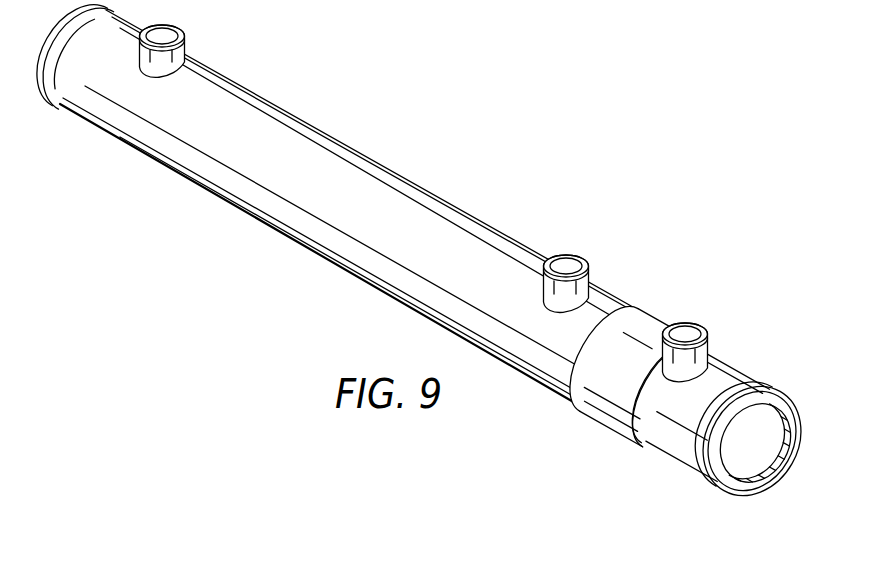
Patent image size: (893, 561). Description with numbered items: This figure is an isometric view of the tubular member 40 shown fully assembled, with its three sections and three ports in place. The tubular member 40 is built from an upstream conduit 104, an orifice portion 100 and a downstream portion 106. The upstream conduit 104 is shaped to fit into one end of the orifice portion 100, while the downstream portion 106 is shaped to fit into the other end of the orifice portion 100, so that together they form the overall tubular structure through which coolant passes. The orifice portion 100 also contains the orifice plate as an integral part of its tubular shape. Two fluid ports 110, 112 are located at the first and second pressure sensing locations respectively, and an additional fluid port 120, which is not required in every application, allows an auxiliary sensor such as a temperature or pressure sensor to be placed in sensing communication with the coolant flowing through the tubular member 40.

The tubular member 40 is at (419, 256).
The upstream conduit 104 is at (374, 161).
The orifice portion 100 is at (648, 328).
The downstream portion 106 is at (683, 441).
The fluid port 110 is at (588, 278).
The fluid port 112 is at (711, 354).
The additional fluid port 120 is at (188, 52).